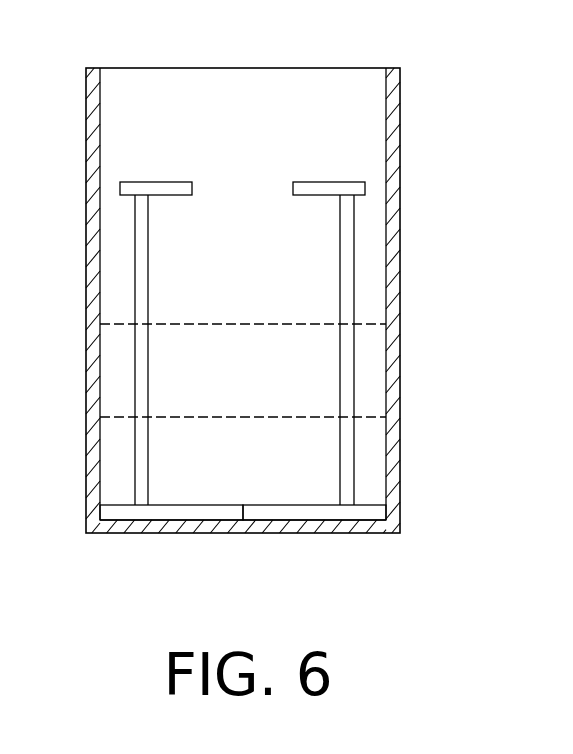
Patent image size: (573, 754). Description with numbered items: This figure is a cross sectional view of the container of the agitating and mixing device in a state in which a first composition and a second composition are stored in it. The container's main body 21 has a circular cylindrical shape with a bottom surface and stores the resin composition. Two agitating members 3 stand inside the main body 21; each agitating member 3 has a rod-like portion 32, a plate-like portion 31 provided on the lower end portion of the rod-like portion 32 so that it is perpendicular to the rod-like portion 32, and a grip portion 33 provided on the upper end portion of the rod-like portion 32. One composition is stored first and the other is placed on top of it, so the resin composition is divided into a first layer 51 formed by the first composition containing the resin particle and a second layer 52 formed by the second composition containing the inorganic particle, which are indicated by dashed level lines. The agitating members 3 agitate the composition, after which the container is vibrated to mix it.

The main body 21 is at (393, 128).
The agitating member 3 is at (251, 257).
The plate-like portion 31 is at (190, 510).
The rod-like portion 32 is at (140, 290).
The grip portion 33 is at (172, 190).
The first layer 51 is at (370, 465).
The second layer 52 is at (370, 368).